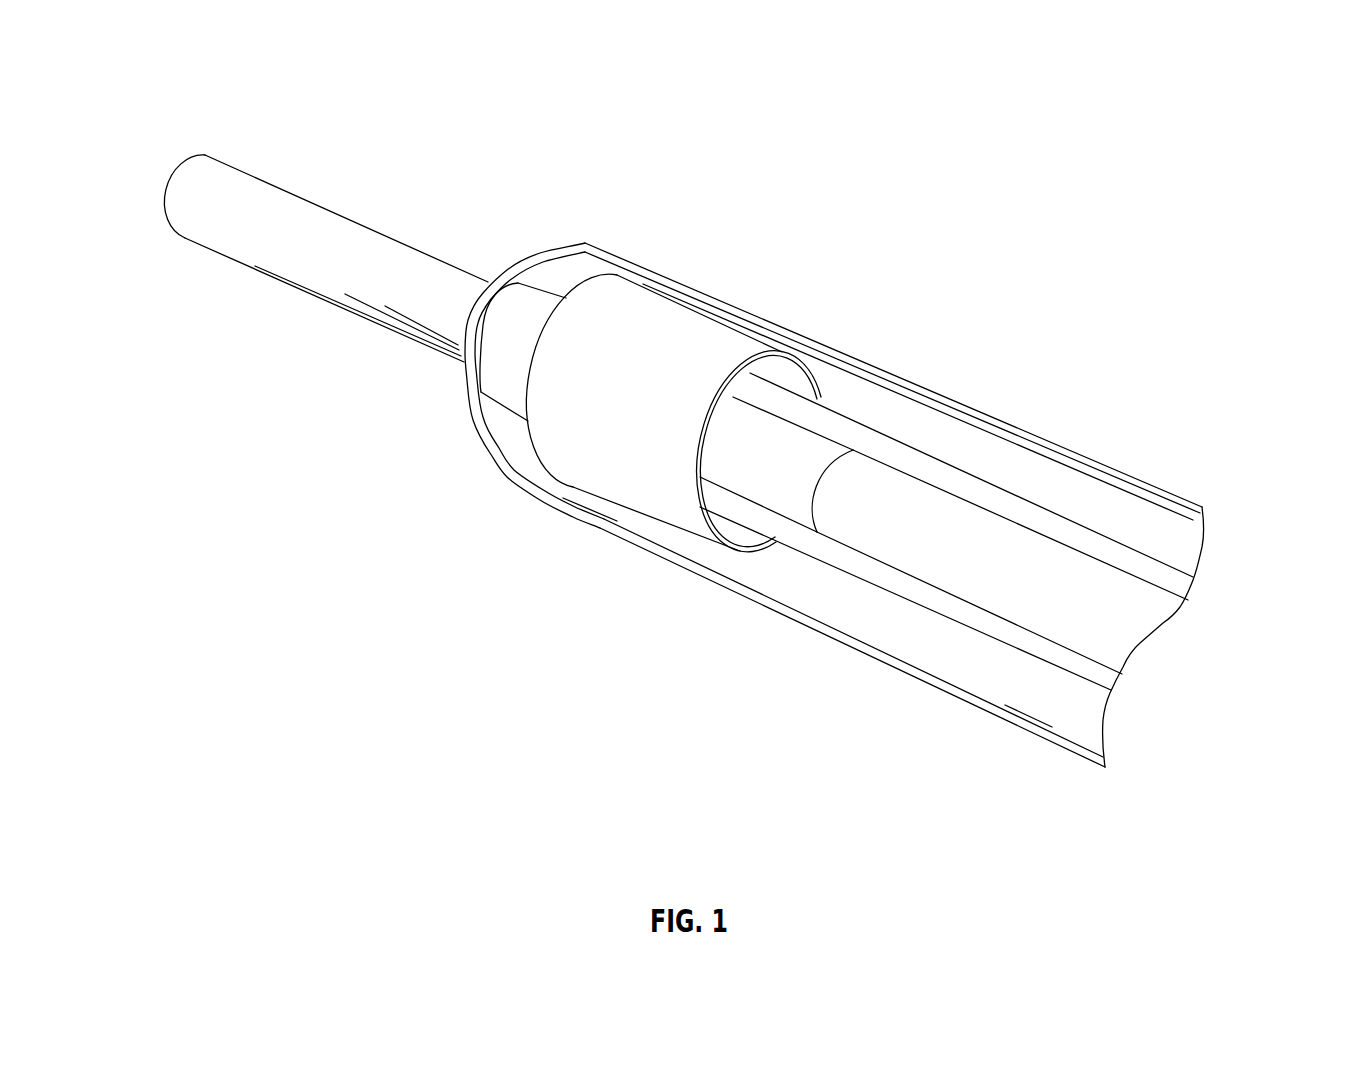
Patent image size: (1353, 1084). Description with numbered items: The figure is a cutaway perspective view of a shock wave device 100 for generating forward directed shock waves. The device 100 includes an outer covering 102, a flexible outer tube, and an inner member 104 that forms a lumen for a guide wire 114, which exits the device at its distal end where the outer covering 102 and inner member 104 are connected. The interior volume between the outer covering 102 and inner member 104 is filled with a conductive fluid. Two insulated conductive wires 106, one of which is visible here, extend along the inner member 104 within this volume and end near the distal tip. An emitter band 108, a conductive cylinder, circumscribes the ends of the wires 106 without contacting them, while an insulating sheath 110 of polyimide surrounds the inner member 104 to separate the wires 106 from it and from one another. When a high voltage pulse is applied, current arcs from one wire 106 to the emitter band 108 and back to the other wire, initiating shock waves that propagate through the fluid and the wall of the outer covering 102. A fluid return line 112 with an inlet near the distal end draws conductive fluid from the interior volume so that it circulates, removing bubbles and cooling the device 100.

The shock wave device 100 is at (160, 100).
The outer covering 102 is at (642, 553).
The inner member 104 is at (1117, 590).
The insulated conductive wire 106 is at (960, 616).
The emitter band 108 is at (690, 323).
The insulating sheath 110 is at (782, 500).
The fluid return line 112 is at (932, 476).
The guide wire 114 is at (225, 237).